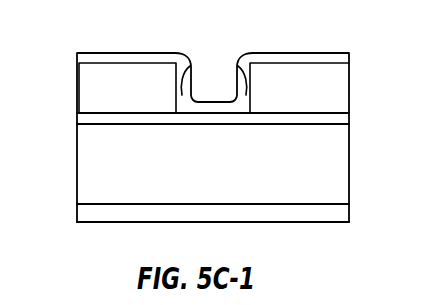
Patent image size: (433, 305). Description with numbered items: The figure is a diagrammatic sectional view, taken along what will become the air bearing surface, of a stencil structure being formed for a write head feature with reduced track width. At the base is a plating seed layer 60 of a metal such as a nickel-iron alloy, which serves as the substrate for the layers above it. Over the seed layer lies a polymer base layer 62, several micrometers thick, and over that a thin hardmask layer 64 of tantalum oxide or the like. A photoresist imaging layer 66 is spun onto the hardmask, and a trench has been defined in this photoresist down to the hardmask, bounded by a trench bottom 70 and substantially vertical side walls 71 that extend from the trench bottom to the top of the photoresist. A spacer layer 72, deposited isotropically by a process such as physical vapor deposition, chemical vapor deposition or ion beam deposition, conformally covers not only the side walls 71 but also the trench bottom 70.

The plating seed layer 60 is at (77, 215).
The base layer 62 is at (77, 168).
The hardmask layer 64 is at (77, 121).
The photoresist imaging layer 66 is at (349, 80).
The trench bottom 70 is at (220, 113).
The side walls 71 is at (191, 65).
The spacer layer 72 is at (112, 52).